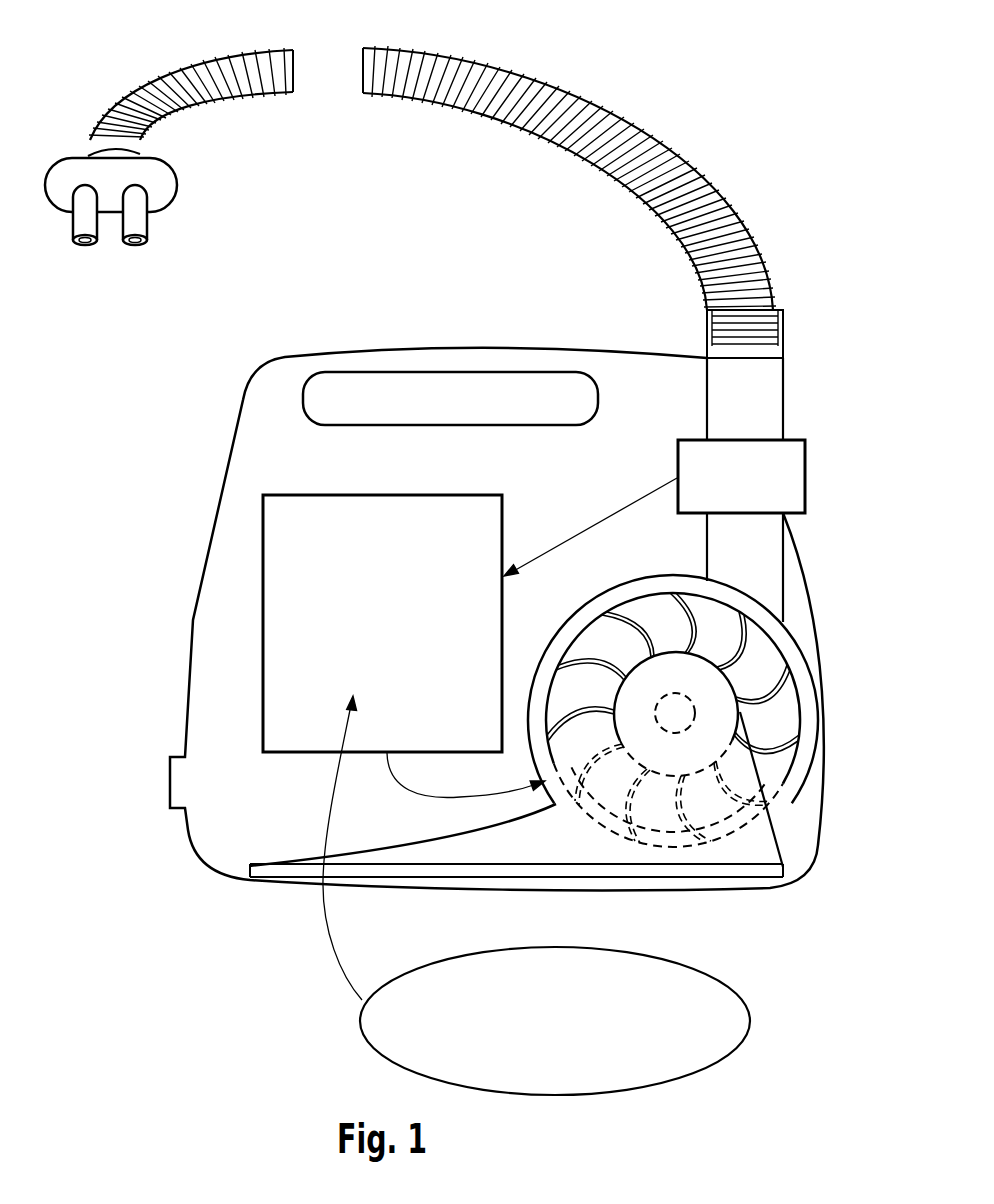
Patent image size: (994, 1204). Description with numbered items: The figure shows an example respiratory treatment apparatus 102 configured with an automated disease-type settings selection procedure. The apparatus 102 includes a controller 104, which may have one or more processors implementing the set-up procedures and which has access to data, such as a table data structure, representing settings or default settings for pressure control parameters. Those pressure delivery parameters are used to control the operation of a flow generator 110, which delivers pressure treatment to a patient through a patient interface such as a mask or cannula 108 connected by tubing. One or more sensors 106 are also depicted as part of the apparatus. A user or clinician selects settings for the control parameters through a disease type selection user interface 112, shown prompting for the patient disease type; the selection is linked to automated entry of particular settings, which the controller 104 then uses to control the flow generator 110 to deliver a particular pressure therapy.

The respiratory treatment apparatus 102 is at (243, 331).
The controller 104 is at (356, 495).
The sensor(s) 106 is at (680, 440).
The mask or cannula 108 is at (177, 183).
The flow generator 110 is at (809, 871).
The disease type selection user interface 112 is at (362, 1025).